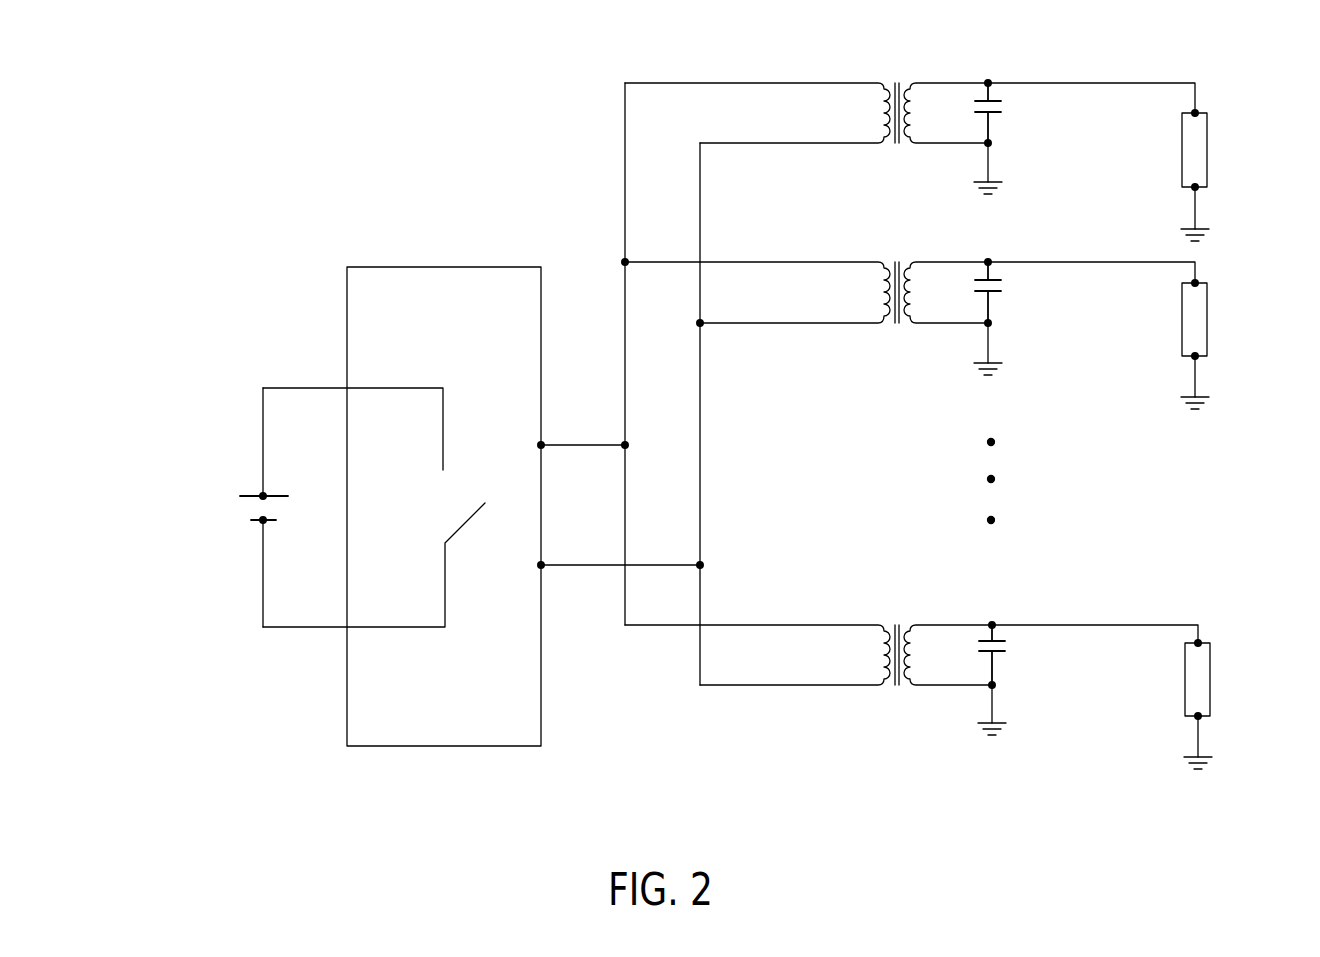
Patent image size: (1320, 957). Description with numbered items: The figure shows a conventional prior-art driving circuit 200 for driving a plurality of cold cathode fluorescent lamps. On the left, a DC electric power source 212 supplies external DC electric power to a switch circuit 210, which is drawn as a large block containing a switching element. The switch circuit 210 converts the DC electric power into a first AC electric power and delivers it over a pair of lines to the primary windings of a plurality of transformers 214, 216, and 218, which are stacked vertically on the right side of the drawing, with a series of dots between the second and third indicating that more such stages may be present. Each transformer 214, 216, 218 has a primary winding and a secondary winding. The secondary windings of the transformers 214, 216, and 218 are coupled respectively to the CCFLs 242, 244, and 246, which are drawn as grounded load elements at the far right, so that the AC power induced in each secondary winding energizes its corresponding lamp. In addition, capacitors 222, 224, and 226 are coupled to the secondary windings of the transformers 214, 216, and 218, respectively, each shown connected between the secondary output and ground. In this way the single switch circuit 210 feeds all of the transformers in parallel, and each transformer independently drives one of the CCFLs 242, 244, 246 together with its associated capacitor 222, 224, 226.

The driving circuit 200 is at (325, 137).
The switch circuit 210 is at (483, 748).
The DC electric power source 212 is at (255, 495).
The transformer 214 is at (892, 81).
The transformer 216 is at (893, 262).
The transformer 218 is at (895, 623).
The capacitor 222 is at (993, 114).
The capacitor 224 is at (994, 294).
The capacitor 226 is at (998, 655).
The CCFL 242 is at (1198, 190).
The CCFL 244 is at (1198, 359).
The CCFL 246 is at (1202, 719).